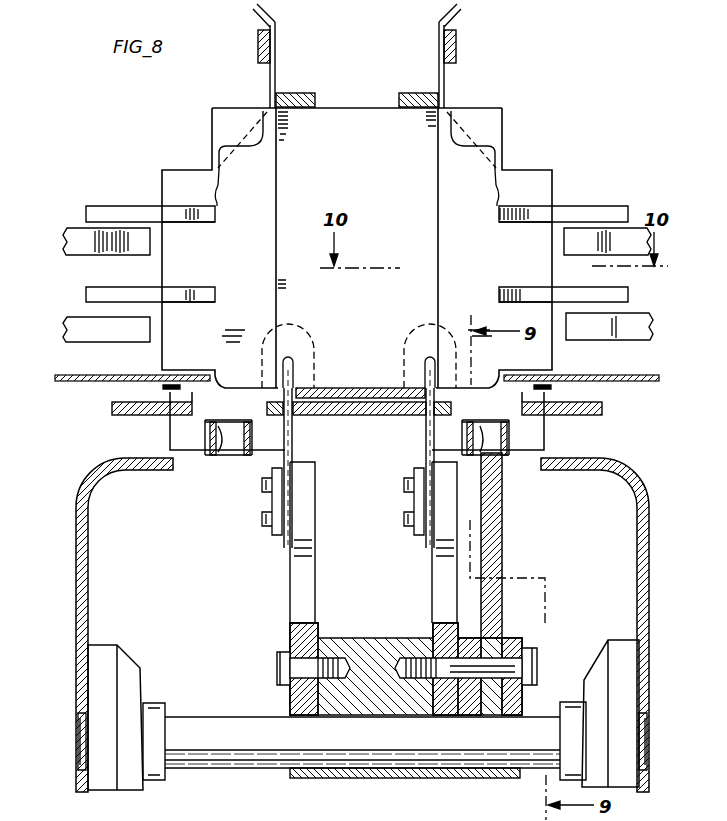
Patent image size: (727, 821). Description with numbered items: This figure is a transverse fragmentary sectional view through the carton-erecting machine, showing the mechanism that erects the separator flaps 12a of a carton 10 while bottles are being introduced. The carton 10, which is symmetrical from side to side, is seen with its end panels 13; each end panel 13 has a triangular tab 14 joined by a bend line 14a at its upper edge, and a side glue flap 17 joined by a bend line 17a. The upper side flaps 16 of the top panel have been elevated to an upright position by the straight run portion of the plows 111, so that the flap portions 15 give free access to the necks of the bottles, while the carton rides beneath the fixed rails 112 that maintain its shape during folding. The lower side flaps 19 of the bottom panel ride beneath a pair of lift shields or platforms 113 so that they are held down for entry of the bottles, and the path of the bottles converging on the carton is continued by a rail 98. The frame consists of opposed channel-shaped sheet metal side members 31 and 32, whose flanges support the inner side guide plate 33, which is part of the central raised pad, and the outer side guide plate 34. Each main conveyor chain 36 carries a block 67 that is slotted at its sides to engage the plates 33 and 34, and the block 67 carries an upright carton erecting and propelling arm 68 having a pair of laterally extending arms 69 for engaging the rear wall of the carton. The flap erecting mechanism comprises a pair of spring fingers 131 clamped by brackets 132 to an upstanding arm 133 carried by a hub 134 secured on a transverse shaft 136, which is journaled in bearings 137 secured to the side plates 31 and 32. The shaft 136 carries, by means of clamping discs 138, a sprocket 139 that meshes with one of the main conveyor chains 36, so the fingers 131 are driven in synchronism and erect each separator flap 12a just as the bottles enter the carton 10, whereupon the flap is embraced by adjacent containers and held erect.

The carton 10 is at (343, 118).
The end panel 13 is at (369, 183).
The carton erecting and propelling arm 68 is at (254, 249).
The triangular tab 14 is at (220, 123).
The bend line 14a is at (252, 127).
The side glue flap 17 is at (178, 265).
The bend line 17a is at (212, 182).
The flap portion 15 is at (268, 18).
The side flap 16 is at (276, 78).
The plow 111 is at (257, 44).
The fixed rail 112 is at (302, 94).
The laterally extending arm 69 is at (99, 206).
The rail 98 is at (68, 241).
The separator flap 12a is at (410, 350).
The spring finger 131 is at (292, 438).
The side guide plate 33 is at (340, 416).
The lift shield or platform 113 is at (72, 382).
The side flap 19 is at (168, 391).
The side guide plate 34 is at (156, 416).
The block 67 is at (196, 445).
The main conveyor chain 36 is at (227, 445).
The side member 32 is at (78, 582).
The side member 31 is at (646, 584).
The bracket 132 is at (272, 510).
The upstanding arm 133 is at (310, 510).
The sprocket 139 is at (502, 512).
The clamping disc 138 is at (522, 640).
The hub 134 is at (390, 650).
The bearing 137 is at (104, 650).
The transverse shaft 136 is at (265, 750).